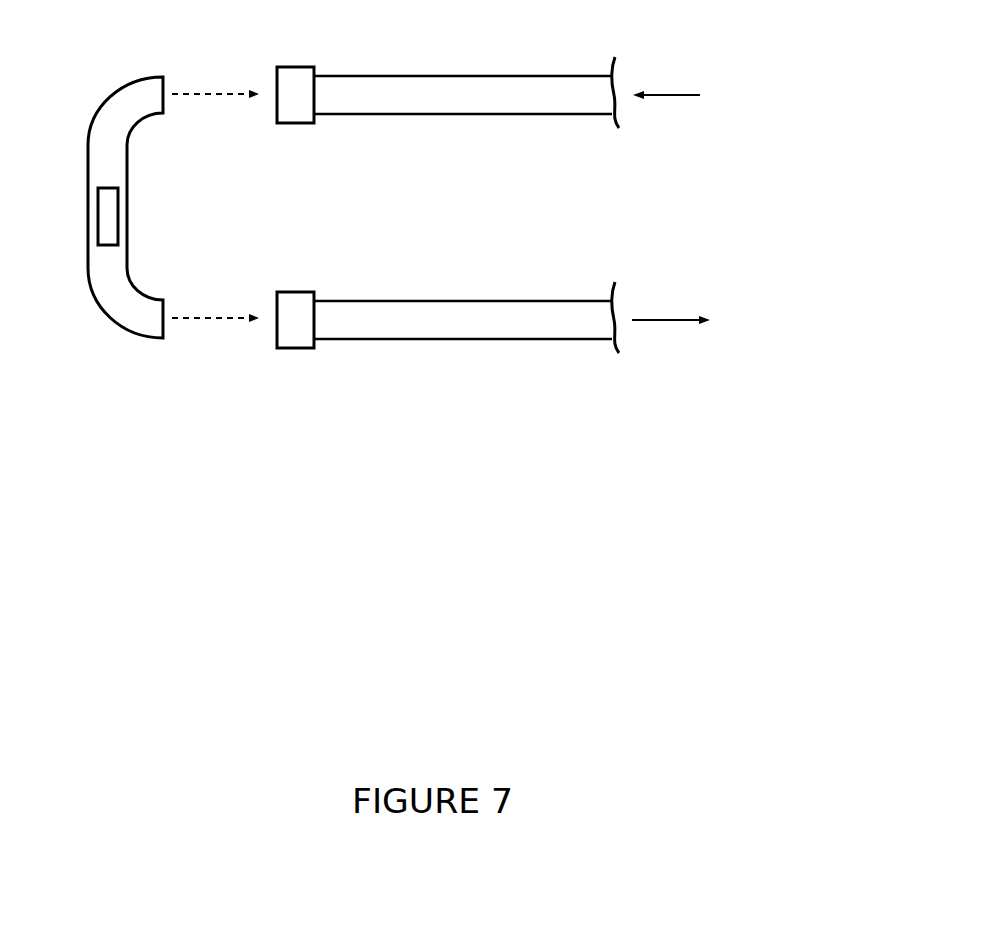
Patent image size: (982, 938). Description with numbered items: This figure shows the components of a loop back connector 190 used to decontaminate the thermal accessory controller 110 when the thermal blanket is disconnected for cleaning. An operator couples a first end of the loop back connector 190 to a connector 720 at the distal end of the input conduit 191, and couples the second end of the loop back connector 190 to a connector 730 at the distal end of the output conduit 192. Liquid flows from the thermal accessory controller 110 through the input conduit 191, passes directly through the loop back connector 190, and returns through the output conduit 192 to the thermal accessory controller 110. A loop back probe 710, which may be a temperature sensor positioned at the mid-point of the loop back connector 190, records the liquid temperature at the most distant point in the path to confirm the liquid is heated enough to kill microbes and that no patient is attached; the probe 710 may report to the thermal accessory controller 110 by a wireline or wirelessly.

The loop back connector 190 is at (127, 226).
The loop back probe 710 is at (98, 227).
The connector 720 is at (295, 67).
The connector 730 is at (295, 292).
The input conduit 191 is at (472, 76).
The output conduit 192 is at (453, 301).
The thermal accessory controller 110 is at (737, 207).